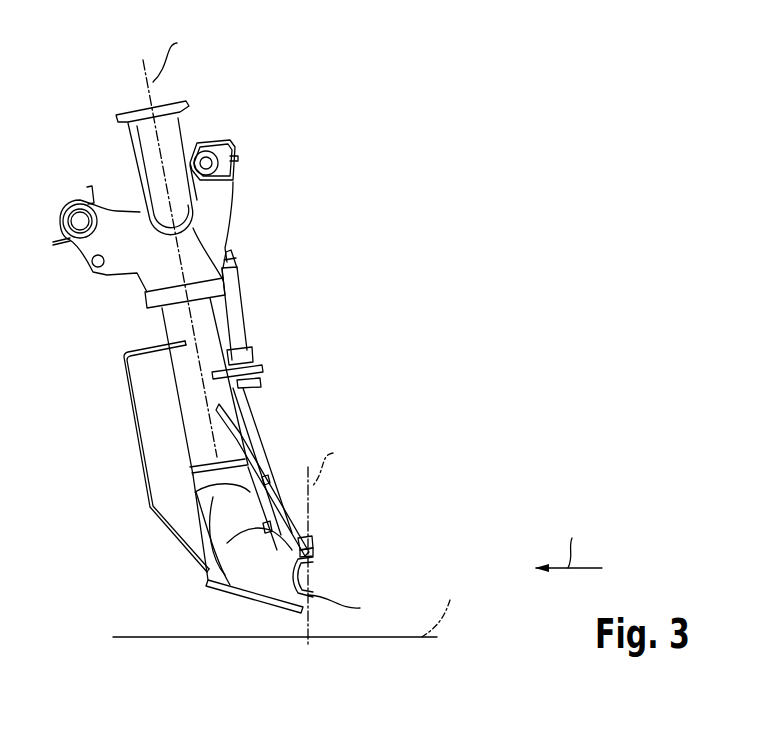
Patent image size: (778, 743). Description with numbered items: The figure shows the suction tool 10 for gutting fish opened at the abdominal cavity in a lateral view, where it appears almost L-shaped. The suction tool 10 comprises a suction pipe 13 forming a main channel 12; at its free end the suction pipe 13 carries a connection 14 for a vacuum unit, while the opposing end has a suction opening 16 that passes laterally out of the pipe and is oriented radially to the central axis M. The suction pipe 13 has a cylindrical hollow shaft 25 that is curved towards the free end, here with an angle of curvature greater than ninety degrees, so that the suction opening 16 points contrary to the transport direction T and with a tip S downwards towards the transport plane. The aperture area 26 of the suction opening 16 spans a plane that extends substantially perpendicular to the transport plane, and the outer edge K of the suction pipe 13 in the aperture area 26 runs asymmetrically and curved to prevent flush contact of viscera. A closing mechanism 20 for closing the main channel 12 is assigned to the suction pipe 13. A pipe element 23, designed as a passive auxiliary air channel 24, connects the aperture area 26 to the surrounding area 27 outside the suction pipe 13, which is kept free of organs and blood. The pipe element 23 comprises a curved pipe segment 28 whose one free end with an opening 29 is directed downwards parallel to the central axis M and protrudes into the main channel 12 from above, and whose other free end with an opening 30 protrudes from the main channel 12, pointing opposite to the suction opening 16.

The suction tool 10 is at (326, 334).
The main channel 12 is at (176, 514).
The suction pipe 13 is at (176, 365).
The connection 14 is at (150, 150).
The suction opening 16 is at (354, 554).
The closing mechanism 20 is at (268, 430).
The pipe element 23 is at (293, 497).
The passive auxiliary air channel 24 is at (310, 545).
The cylindrical hollow shaft 25 is at (222, 534).
The aperture area 26 is at (316, 577).
The surrounding area 27 is at (305, 365).
The curved pipe segment 28 is at (300, 537).
The opening 29 is at (247, 592).
The opening 30 is at (253, 523).